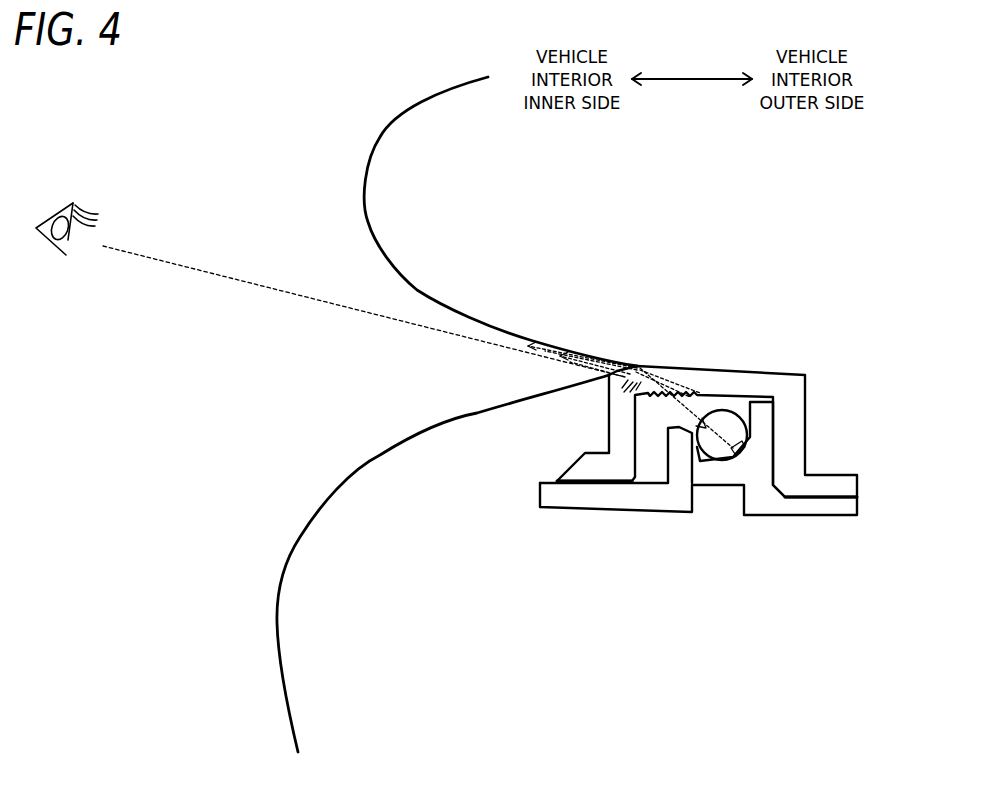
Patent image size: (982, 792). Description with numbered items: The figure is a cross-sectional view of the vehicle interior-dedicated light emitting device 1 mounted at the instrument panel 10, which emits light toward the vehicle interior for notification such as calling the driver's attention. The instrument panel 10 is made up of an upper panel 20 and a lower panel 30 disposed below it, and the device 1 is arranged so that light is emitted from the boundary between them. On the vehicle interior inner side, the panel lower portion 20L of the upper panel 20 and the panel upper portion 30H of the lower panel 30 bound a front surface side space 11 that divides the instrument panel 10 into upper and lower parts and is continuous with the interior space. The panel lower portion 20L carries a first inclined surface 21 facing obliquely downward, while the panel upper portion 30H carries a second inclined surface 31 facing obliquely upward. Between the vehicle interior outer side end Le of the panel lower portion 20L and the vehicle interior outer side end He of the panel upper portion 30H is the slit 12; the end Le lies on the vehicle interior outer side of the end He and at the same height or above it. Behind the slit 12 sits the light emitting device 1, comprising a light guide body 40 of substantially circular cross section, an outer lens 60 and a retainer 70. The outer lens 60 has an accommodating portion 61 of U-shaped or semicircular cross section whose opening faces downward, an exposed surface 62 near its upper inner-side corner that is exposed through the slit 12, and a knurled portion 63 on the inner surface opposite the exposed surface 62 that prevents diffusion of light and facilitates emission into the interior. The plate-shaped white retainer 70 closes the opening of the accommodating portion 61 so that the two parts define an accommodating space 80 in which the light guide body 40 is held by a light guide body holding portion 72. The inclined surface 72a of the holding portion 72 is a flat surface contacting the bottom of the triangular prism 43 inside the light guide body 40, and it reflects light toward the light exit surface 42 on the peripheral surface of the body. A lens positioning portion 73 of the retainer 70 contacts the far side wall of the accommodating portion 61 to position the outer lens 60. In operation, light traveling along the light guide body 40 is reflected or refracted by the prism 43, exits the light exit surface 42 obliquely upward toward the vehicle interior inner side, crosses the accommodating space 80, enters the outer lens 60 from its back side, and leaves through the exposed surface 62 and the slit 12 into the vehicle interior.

The vehicle interior-dedicated light emitting device 1 is at (516, 512).
The instrument panel 10 is at (247, 567).
The front surface side space 11 is at (478, 378).
The slit 12 is at (617, 371).
The upper panel 20 is at (406, 108).
The panel lower portion 20L is at (386, 263).
The first inclined surface 21 is at (458, 315).
The lower panel 30 is at (278, 692).
The panel upper portion 30H is at (338, 488).
The second inclined surface 31 is at (425, 435).
The light guide body 40 is at (737, 420).
The light exit surface 42 is at (702, 420).
The prism 43 is at (743, 460).
The outer lens 60 is at (742, 382).
The accommodating portion 61 is at (797, 422).
The exposed surface 62 is at (633, 367).
The knurled portion 63 is at (630, 417).
The retainer 70 is at (599, 495).
The light guide body holding portion 72 is at (711, 467).
The inclined surface 72a is at (743, 415).
The lens positioning portion 73 is at (764, 447).
The accommodating space 80 is at (655, 465).
The vehicle interior outer side end of the panel upper portion He is at (598, 372).
The vehicle interior outer side end of the panel lower portion Le is at (640, 362).